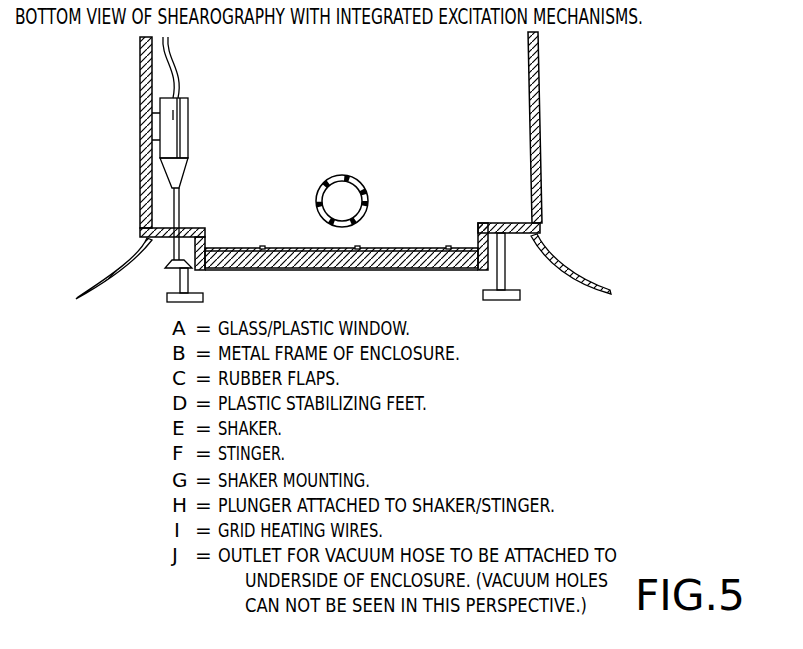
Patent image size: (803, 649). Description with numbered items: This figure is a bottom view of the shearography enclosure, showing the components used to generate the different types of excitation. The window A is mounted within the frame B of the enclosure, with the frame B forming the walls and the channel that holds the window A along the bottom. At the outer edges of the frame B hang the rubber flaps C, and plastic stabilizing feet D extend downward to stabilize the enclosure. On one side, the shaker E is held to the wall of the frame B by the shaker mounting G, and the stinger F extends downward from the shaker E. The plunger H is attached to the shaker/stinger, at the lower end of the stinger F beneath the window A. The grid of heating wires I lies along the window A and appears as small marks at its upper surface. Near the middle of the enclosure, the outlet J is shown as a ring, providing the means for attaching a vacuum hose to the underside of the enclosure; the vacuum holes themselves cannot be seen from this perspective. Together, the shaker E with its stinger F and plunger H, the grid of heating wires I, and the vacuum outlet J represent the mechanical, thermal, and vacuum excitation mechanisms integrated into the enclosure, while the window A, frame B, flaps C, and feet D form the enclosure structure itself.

The window A is at (341, 239).
The frame B is at (540, 121).
The rubber flaps C is at (582, 274).
The plastic stabilizing feet D is at (510, 300).
The shaker E is at (188, 128).
The stinger F is at (180, 219).
The shaker mounting G is at (150, 115).
The plunger H is at (172, 268).
The grid of heating wires I is at (400, 298).
The outlet J is at (362, 178).